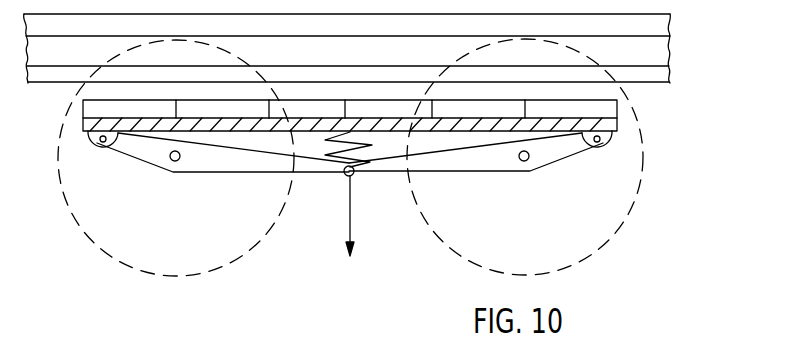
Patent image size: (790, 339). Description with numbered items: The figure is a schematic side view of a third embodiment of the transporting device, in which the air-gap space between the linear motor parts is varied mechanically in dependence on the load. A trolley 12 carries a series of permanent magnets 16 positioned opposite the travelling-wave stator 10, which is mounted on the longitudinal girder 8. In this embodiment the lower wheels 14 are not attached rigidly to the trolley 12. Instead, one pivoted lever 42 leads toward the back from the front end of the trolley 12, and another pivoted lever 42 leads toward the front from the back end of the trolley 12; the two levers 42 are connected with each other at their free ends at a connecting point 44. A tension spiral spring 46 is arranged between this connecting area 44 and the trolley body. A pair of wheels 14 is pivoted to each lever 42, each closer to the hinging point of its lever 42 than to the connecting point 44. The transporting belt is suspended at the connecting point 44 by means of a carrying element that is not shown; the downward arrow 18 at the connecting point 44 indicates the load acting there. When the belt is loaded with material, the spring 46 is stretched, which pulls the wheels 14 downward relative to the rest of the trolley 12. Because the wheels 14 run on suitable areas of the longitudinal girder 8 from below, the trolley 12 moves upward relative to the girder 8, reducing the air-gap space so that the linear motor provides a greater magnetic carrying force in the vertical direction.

The longitudinal girder 8 is at (663, 51).
The travelling-wave stator 10 is at (665, 80).
The trolley 12 is at (297, 252).
The lower wheel 14 is at (100, 222).
The permanent magnet 16 is at (612, 106).
The load direction 18 is at (356, 258).
The pivoted lever 42 is at (200, 166).
The connecting point 44 is at (346, 176).
The tension spiral spring 46 is at (300, 153).